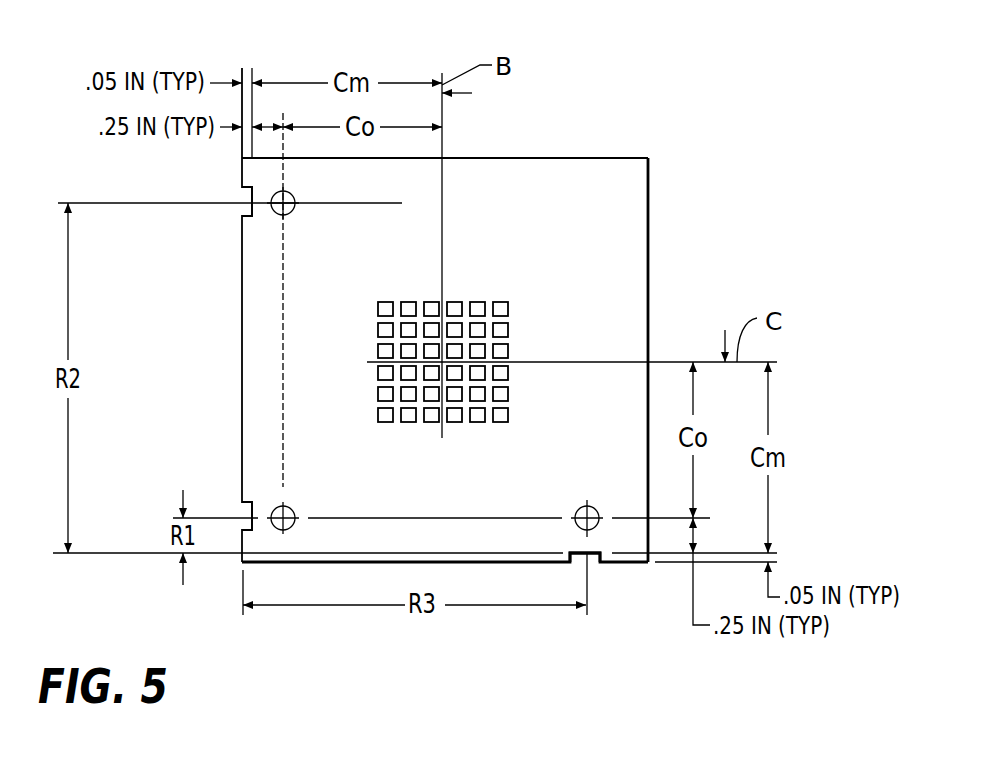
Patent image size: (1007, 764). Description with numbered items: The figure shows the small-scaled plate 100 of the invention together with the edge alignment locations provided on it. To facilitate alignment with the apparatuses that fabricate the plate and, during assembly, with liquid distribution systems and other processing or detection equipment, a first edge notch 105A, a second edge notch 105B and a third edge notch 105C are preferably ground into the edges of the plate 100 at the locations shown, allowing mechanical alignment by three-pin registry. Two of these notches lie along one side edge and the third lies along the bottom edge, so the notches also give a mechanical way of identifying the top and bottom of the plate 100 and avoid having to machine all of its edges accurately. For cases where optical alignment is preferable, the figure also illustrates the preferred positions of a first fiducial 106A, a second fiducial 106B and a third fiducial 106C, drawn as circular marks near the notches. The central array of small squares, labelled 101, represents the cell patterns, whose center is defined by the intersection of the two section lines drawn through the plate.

The small-scaled plate 100 is at (648, 270).
The component pad array 101 is at (507, 305).
The first edge notch 105A is at (248, 205).
The second edge notch 105B is at (250, 518).
The third edge notch 105C is at (592, 558).
The first fiducial 106A is at (275, 214).
The second fiducial 106B is at (296, 527).
The third fiducial 106C is at (578, 527).